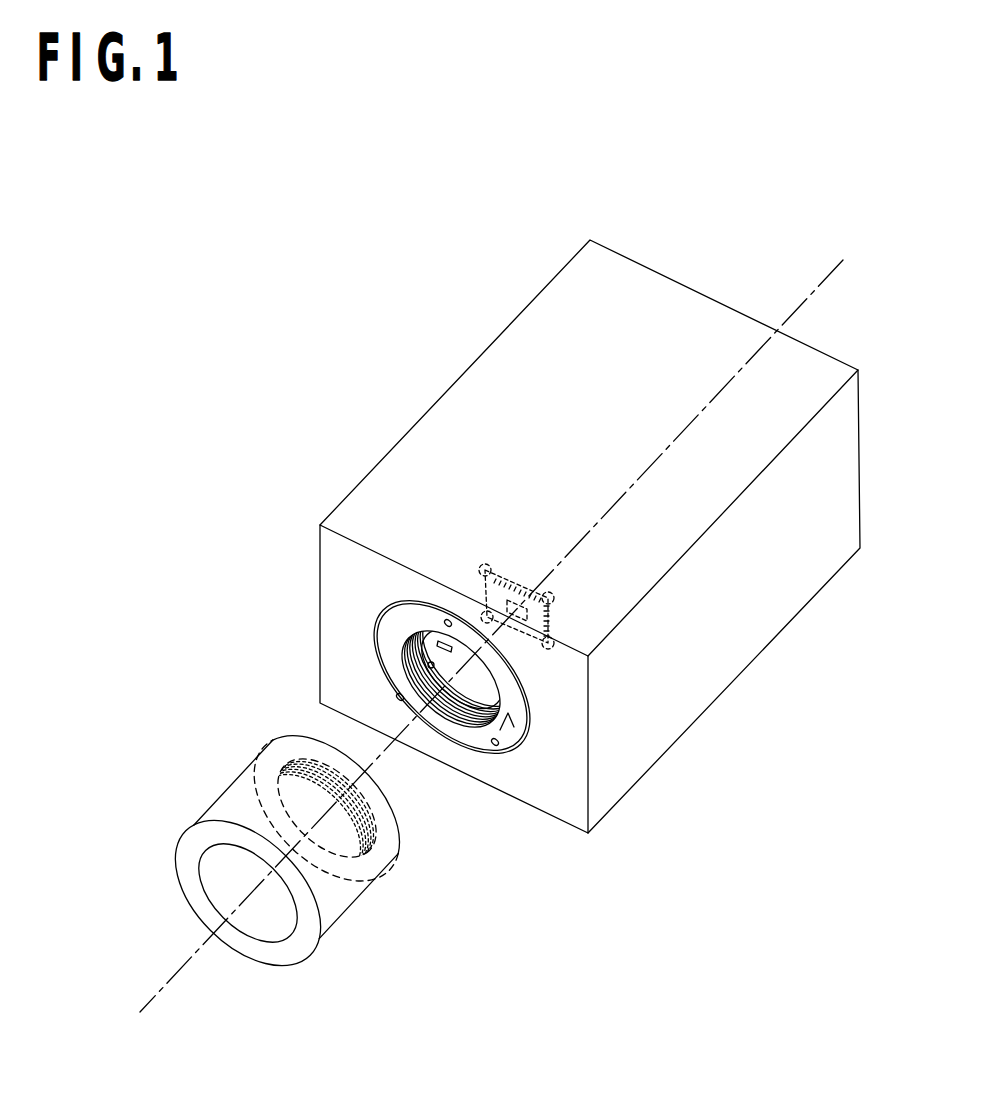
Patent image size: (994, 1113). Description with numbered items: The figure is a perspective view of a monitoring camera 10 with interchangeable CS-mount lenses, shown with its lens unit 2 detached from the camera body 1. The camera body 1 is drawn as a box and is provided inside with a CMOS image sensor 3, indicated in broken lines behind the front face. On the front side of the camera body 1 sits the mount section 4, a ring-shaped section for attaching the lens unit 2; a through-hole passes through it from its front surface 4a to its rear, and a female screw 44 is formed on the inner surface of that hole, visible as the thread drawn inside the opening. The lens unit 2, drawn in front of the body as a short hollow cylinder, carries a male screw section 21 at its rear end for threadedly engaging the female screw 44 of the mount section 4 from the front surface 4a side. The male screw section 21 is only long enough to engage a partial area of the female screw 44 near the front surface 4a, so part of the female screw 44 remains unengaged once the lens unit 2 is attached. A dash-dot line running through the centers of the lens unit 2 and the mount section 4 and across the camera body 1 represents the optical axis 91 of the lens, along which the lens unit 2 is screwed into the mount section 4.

The monitoring camera 10 is at (558, 267).
The camera body 1 is at (450, 400).
The CMOS image sensor 3 is at (513, 576).
The mount section 4 is at (467, 740).
The female screw 44 is at (405, 657).
The front surface 4a is at (508, 713).
The lens unit 2 is at (228, 800).
The male screw section 21 is at (383, 853).
The optical axis 91 is at (163, 988).